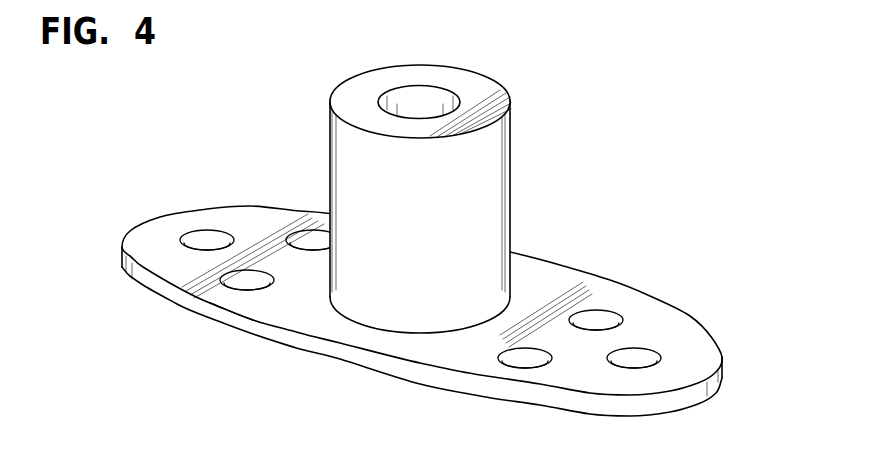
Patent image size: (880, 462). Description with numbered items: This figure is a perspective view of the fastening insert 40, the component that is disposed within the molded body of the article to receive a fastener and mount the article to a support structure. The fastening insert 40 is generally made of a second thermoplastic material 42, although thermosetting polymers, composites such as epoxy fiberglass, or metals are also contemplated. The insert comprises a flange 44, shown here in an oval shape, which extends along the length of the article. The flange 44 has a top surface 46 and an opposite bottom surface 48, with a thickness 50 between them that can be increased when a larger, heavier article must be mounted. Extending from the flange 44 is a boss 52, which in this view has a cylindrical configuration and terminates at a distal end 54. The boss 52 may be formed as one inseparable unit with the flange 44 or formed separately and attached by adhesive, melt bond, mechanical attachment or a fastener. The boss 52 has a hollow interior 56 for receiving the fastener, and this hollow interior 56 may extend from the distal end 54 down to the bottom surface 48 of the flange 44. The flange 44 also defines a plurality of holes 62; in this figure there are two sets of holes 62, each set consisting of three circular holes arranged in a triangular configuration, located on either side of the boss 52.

The fastening insert 40 is at (647, 136).
The second thermoplastic material 42 is at (713, 389).
The flange 44 is at (408, 349).
The top surface 46 is at (159, 240).
The bottom surface 48 is at (258, 337).
The thickness 50 is at (343, 358).
The boss 52 is at (446, 175).
The distal end 54 is at (365, 92).
The hollow interior 56 is at (420, 98).
The plurality of holes 62 is at (245, 278).